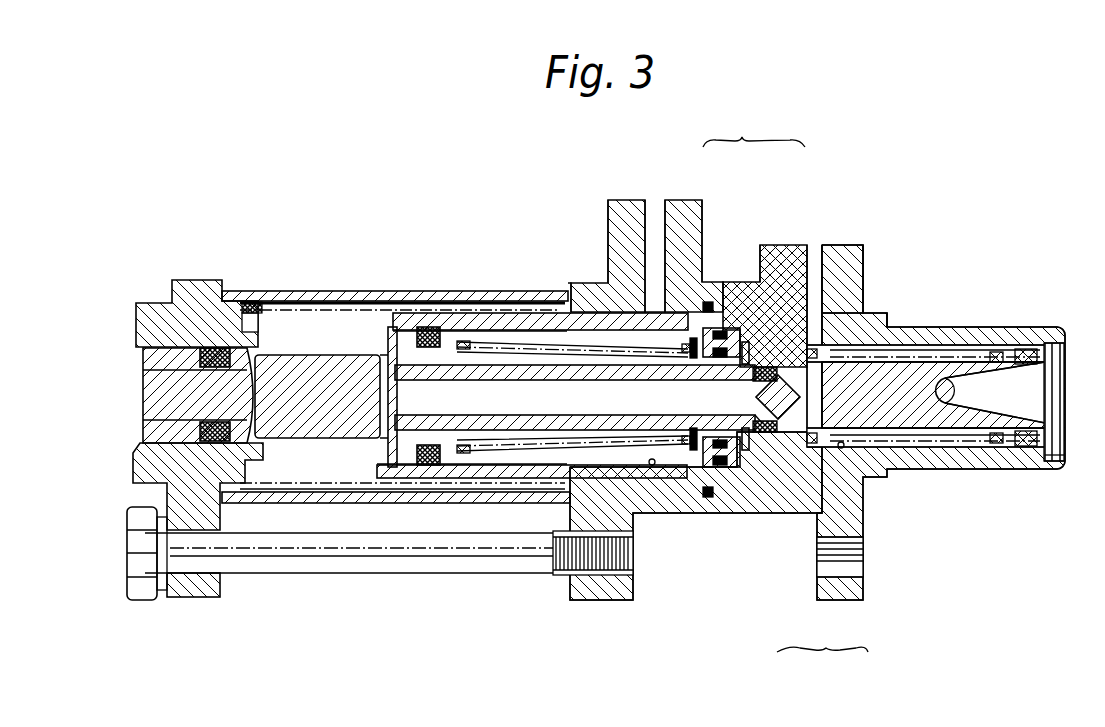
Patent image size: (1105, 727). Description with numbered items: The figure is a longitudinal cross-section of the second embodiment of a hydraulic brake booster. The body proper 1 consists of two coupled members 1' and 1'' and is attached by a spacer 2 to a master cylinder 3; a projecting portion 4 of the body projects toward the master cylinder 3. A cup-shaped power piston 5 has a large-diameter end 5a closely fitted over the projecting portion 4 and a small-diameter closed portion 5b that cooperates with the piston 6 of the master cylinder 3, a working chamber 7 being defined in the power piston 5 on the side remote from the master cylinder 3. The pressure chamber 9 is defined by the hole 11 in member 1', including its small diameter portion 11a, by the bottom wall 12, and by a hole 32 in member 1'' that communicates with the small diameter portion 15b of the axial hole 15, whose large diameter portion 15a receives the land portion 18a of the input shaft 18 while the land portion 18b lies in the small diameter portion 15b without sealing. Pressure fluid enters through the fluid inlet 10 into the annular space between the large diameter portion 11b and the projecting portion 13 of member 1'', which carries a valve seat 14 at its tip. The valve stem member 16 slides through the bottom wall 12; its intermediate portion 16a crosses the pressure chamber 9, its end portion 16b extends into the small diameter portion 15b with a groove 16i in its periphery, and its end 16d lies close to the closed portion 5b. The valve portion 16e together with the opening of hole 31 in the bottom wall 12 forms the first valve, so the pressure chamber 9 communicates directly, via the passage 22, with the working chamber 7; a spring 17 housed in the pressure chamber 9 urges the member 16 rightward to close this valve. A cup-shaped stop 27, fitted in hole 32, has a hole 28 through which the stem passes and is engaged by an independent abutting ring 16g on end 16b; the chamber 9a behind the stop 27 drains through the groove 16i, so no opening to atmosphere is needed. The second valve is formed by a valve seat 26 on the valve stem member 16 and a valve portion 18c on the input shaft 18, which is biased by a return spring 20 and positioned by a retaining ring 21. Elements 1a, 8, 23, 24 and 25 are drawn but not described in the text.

The body proper 1 is at (754, 125).
The body member 1' is at (711, 210).
The body member 1'' is at (779, 253).
The step 1a is at (567, 300).
The spacer 2 is at (356, 292).
The master cylinder 3 is at (215, 292).
The projecting portion 4 is at (506, 305).
The power piston 5 is at (386, 324).
The large diameter end 5a is at (530, 330).
The closed portion 5b is at (294, 364).
The piston 6 is at (232, 346).
The working chamber 7 is at (408, 320).
The seal ring 8 is at (258, 310).
The pressure chamber 9 is at (697, 215).
The chamber 9a is at (789, 300).
The fluid inlet 10 is at (649, 302).
The hole 11 is at (575, 335).
The small diameter portion 11a is at (470, 332).
The large diameter portion 11b is at (613, 313).
The bottom wall 12 is at (437, 328).
The projecting portion 13 is at (677, 432).
The valve seat 14 is at (412, 478).
The hole 15 is at (822, 660).
The large diameter portion 15a is at (841, 448).
The small diameter portion 15b is at (793, 516).
The valve stem member 16 is at (541, 432).
The intermediate portion 16a is at (698, 450).
The end portion 16b is at (766, 437).
The end 16d is at (387, 445).
The valve portion 16e is at (399, 448).
The abutting portion 16g is at (745, 434).
The groove 16i is at (826, 305).
The spring 17 is at (486, 441).
The input shaft 18 is at (927, 377).
The land portion 18a is at (1037, 347).
The land portion 18b is at (868, 318).
The valve portion 18c is at (807, 393).
The return spring 20 is at (990, 350).
The retaining ring 21 is at (1047, 462).
The passage 22 is at (512, 403).
The chamfer 23 is at (836, 395).
The rod 24 is at (899, 356).
The seal 25 is at (836, 307).
The valve seat 26 is at (826, 262).
The stop 27 is at (744, 341).
The hole 28 is at (715, 327).
The hole 31 is at (449, 452).
The hole 32 is at (652, 466).